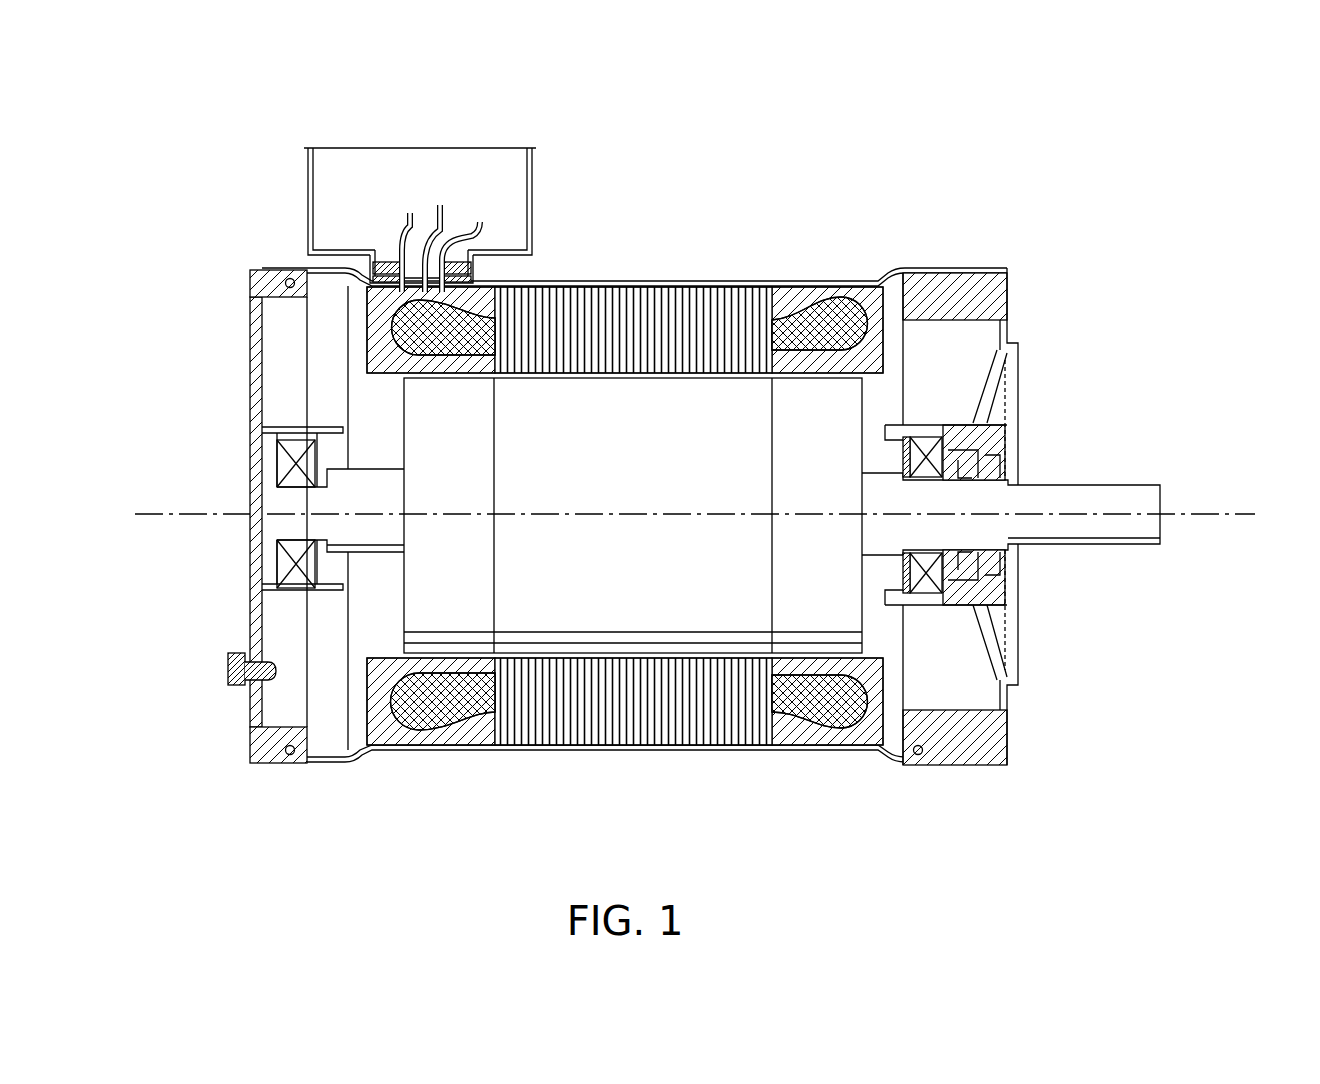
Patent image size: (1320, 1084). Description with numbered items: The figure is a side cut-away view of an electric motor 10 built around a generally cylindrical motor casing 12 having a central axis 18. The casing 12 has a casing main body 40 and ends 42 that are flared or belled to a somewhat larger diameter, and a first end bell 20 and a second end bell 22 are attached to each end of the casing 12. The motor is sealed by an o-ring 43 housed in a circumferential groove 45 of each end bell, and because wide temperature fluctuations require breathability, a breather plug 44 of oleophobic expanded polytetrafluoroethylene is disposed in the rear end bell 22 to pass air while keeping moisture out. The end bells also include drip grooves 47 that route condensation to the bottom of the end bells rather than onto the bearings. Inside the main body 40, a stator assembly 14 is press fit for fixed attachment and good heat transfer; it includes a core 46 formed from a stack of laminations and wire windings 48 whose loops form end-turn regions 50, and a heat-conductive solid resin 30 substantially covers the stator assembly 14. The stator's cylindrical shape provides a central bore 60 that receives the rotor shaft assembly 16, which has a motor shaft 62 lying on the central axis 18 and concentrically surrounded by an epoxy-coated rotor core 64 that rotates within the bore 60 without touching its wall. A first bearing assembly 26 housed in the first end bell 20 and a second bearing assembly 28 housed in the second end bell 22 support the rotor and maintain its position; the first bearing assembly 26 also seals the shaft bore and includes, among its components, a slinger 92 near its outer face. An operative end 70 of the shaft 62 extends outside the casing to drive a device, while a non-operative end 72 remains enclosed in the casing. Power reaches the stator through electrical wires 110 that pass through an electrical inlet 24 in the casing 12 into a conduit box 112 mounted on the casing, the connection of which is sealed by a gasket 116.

The electric motor 10 is at (782, 138).
The motor casing 12 is at (356, 770).
The stator assembly 14 is at (698, 305).
The rotor shaft assembly 16 is at (608, 615).
The central axis 18 is at (1202, 507).
The first end bell 20 is at (980, 270).
The second end bell 22 is at (250, 286).
The electrical inlet 24 is at (480, 285).
The first bearing assembly 26 is at (1005, 428).
The second bearing assembly 28 is at (252, 430).
The heat-conductive solid resin 30 is at (384, 262).
The casing main body 40 is at (624, 755).
The flared ends 42 is at (334, 766).
The o-ring 43 is at (293, 760).
The breather plug 44 is at (228, 672).
The circumferential groove 45 is at (290, 750).
The core 46 is at (633, 300).
The drip groove 47 is at (325, 430).
The wire windings 48 is at (418, 340).
The end-turn regions 50 is at (455, 345).
The central bore 60 is at (885, 398).
The motor shaft 62 is at (1130, 492).
The rotor core 64 is at (741, 615).
The operative end 70 is at (1160, 520).
The non-operative end 72 is at (290, 498).
The slinger 92 is at (1012, 575).
The electrical wires 110 is at (440, 205).
The conduit box 112 is at (535, 168).
The gasket 116 is at (372, 276).